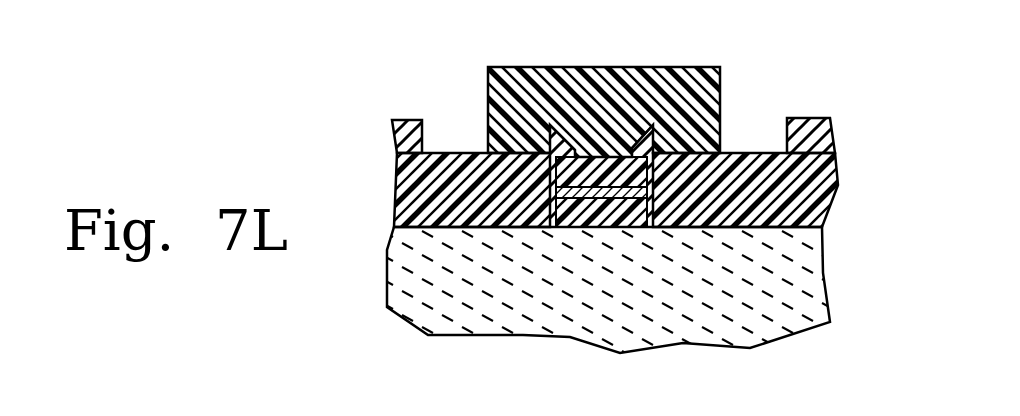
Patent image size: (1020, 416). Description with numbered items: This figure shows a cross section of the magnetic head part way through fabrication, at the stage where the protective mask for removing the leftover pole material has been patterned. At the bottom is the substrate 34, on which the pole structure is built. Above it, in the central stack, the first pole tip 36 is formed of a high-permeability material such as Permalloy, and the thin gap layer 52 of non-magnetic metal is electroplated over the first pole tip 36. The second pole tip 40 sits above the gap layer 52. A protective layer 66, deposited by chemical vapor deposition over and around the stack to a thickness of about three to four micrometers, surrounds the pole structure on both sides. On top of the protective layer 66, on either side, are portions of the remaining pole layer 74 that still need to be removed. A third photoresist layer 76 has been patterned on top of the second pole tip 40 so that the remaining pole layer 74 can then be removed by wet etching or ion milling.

The substrate 34 is at (800, 290).
The first pole tip 36 is at (584, 198).
The second pole tip 40 is at (588, 178).
The gap layer 52 is at (660, 190).
The protective layer 66 is at (803, 188).
The remaining pole layer 74 is at (403, 120).
The third photoresist layer 76 is at (668, 66).